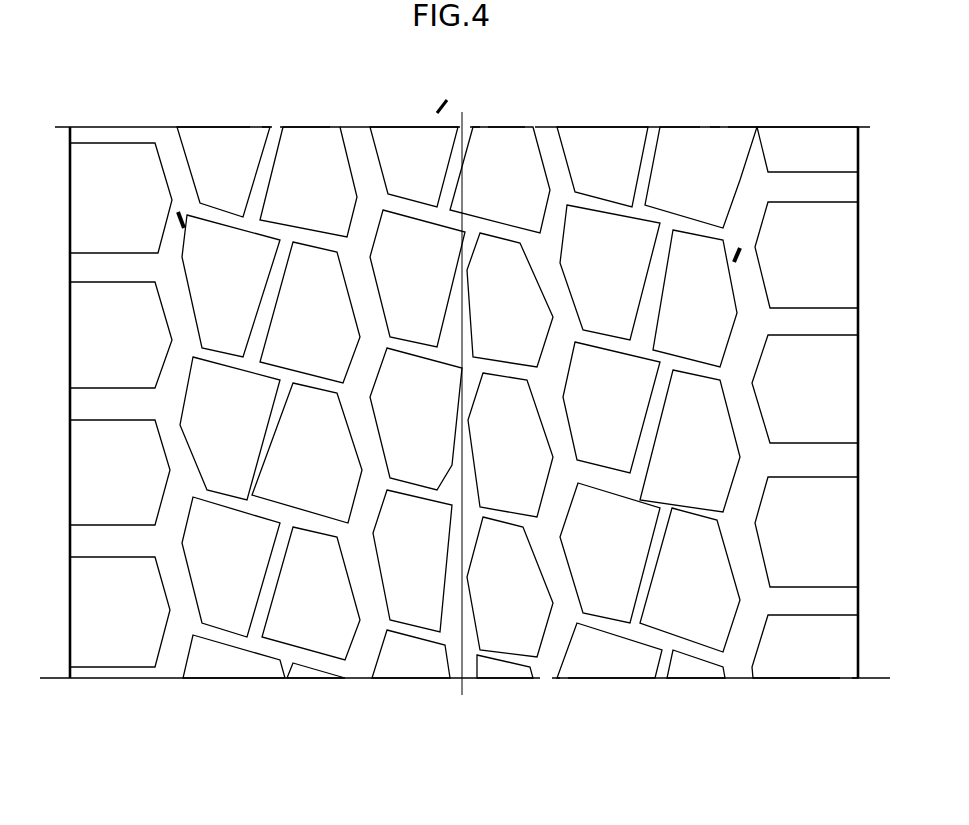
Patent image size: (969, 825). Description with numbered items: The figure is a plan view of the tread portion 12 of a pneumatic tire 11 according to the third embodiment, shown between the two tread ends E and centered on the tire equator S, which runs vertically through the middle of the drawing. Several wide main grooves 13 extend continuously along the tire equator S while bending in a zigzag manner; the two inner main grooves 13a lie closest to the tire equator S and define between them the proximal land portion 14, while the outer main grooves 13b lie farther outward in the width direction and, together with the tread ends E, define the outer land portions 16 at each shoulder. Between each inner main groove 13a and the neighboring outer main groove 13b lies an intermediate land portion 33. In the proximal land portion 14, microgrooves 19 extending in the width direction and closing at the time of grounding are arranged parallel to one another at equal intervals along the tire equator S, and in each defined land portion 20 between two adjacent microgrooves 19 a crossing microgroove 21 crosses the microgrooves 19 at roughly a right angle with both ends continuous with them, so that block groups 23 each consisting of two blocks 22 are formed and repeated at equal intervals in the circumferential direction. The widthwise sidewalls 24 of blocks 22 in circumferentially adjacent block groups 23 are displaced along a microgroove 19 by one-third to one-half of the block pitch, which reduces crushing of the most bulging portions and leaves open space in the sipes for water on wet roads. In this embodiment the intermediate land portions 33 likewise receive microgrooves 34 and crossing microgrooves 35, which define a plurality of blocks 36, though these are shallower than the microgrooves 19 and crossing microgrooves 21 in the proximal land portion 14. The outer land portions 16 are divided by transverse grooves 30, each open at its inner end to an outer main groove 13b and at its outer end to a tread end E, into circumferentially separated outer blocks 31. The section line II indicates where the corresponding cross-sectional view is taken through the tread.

The pneumatic tire 11 is at (515, 110).
The tread portion 12 is at (437, 112).
The main groove 13 is at (560, 163).
The inner main groove 13a is at (357, 133).
The outer main groove 13b is at (170, 133).
The proximal land portion 14 is at (483, 680).
The outer land portion 16 is at (107, 680).
The microgroove 19 is at (467, 500).
The defined land portion 20 is at (553, 447).
The crossing microgroove 21 is at (497, 262).
The block 22 is at (410, 367).
The block group 23 is at (547, 372).
The widthwise sidewall 24 is at (447, 463).
The transverse groove 30 is at (117, 400).
The outer block 31 is at (137, 500).
The intermediate land portion 33 is at (280, 680).
The microgroove 34 is at (225, 353).
The crossing microgroove 35 is at (270, 308).
The block 36 is at (250, 427).
The tire equator S is at (465, 120).
The tread end E is at (67, 243).
The section line II is at (455, 255).